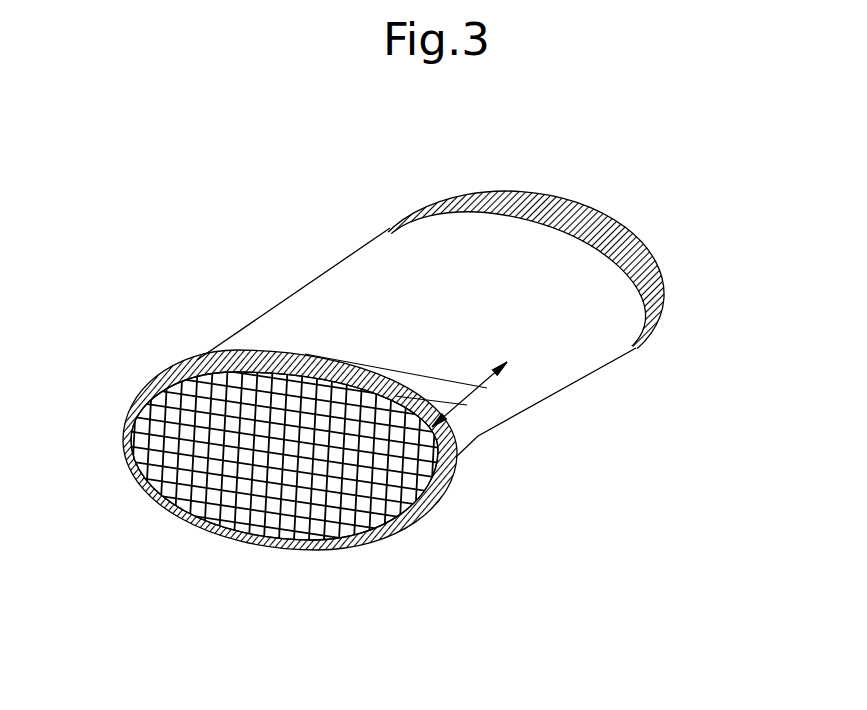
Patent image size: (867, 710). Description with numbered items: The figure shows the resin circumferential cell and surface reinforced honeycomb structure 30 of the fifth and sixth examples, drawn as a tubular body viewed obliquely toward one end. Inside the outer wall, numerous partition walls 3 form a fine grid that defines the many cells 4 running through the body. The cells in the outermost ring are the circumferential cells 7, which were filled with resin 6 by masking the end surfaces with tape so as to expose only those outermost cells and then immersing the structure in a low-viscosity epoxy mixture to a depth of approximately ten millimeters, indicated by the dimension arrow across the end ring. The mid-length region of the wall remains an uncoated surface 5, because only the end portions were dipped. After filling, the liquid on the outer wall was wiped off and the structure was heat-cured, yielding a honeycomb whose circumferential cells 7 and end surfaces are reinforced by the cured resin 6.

The resin circumferential cell and surface reinforced honeycomb structure 30 is at (242, 238).
The partition walls 3 is at (183, 433).
The cells 4 is at (317, 520).
The uncoated surface 5 is at (548, 381).
The resin 6 is at (434, 387).
The circumferential cells 7 is at (396, 525).